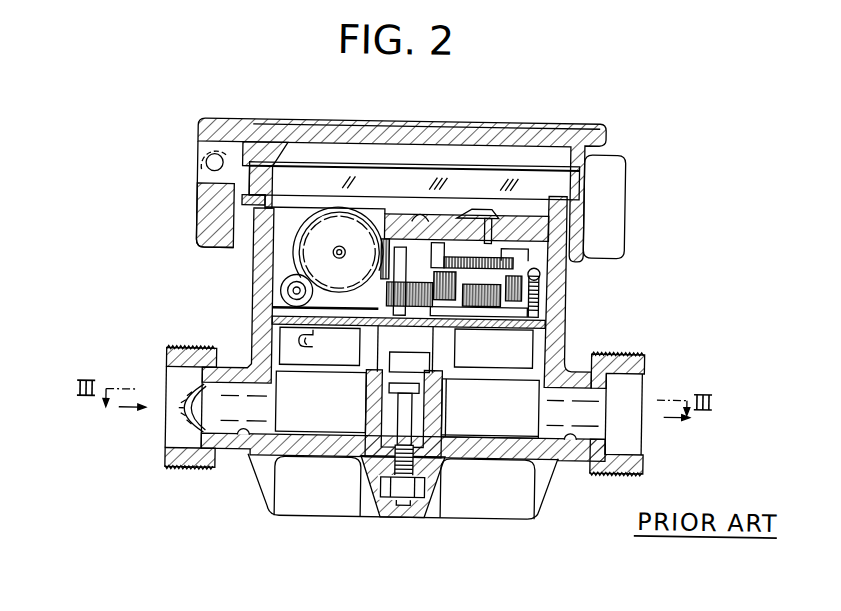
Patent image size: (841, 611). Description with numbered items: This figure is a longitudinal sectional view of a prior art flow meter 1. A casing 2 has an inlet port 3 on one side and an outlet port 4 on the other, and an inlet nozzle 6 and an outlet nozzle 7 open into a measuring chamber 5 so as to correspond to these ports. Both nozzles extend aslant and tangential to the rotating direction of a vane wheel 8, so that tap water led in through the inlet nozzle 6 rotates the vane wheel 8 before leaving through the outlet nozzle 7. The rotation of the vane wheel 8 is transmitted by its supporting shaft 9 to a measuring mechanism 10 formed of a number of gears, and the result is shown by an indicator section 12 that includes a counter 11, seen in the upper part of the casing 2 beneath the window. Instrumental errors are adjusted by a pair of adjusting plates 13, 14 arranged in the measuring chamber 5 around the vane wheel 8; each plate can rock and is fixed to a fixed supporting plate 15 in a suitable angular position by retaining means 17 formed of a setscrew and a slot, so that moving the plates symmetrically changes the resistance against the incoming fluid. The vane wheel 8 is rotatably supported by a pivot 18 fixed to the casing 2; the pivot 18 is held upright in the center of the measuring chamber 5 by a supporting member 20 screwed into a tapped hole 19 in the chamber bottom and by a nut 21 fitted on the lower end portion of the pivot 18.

The flow meter 1 is at (166, 217).
The casing 2 is at (563, 309).
The inlet port 3 is at (175, 468).
The outlet port 4 is at (638, 351).
The measuring chamber 5 is at (313, 436).
The inlet nozzle 6 is at (245, 444).
The outlet nozzle 7 is at (575, 436).
The vane wheel 8 is at (523, 424).
The supporting shaft 9 is at (428, 356).
The measuring mechanism 10 is at (512, 268).
The counter 11 is at (310, 251).
The indicator section 12 is at (535, 201).
The adjusting plate 13 is at (328, 364).
The adjusting plate 14 is at (497, 354).
The fixed supporting plate 15 is at (280, 325).
The retaining means 17 is at (305, 332).
The pivot 18 is at (368, 481).
The tapped hole 19 is at (433, 484).
The supporting member 20 is at (440, 434).
The nut 21 is at (398, 482).